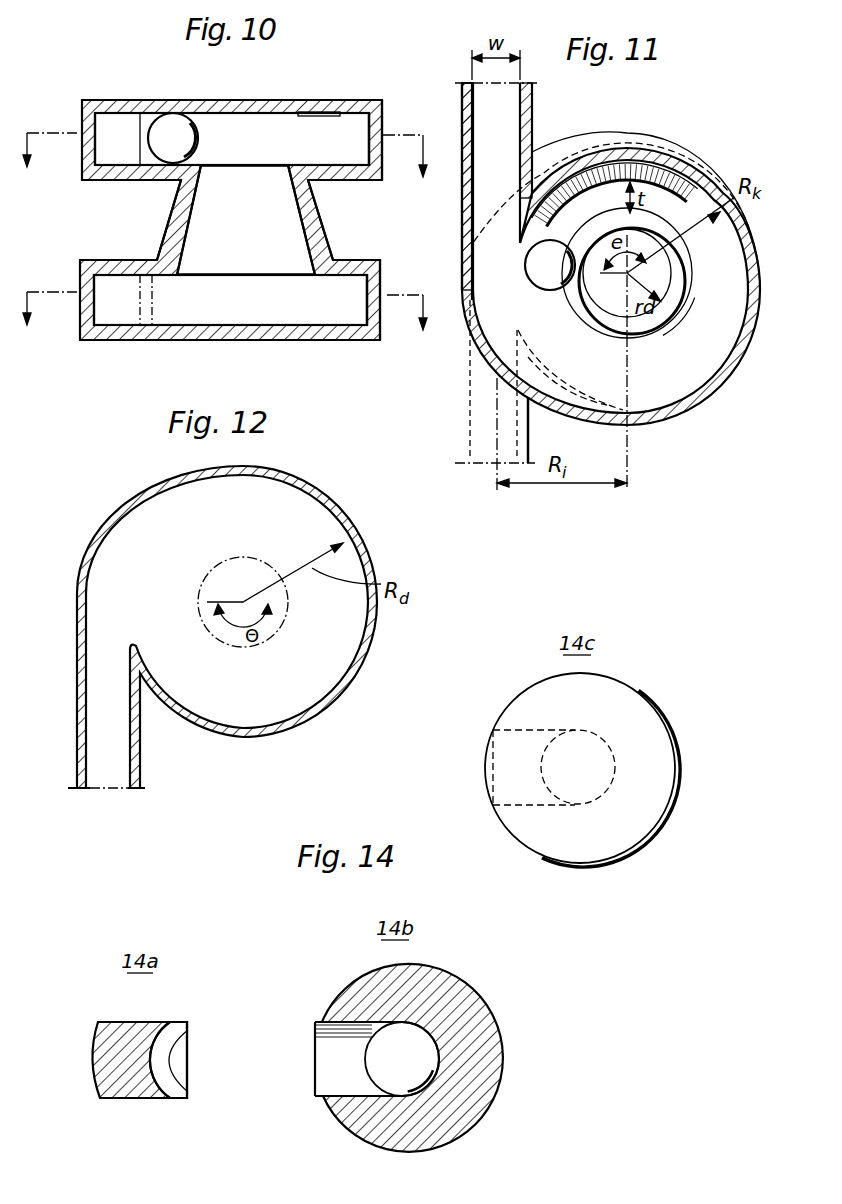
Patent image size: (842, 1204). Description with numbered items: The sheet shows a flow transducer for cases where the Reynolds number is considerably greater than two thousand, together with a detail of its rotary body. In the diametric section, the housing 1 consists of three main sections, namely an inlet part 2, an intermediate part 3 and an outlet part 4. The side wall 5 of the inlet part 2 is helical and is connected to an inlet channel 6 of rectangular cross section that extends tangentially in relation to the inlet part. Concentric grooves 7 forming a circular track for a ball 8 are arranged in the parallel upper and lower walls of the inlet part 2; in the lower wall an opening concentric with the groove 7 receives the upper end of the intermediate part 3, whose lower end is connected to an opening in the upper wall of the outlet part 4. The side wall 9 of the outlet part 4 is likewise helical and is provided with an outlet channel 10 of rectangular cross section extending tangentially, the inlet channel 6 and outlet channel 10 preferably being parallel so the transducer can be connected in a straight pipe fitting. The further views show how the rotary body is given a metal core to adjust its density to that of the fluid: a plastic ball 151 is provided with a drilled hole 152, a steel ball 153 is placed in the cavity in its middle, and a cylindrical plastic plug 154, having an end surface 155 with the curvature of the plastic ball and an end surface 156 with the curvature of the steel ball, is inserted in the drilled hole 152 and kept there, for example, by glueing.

In FIG. 10, the housing 1 is at (259, 96).
In FIG. 10, the inlet part 2 is at (217, 100).
In FIG. 10, the intermediate part 3 is at (173, 233).
In FIG. 10, the outlet part 4 is at (343, 333).
In FIG. 10, the side wall 5 is at (383, 123).
In FIG. 11, the side wall 5 is at (696, 398).
In FIG. 10, the inlet channel 6 is at (115, 127).
In FIG. 11, the inlet channel 6 is at (500, 118).
In FIG. 10, the concentric grooves 7 is at (313, 113).
In FIG. 11, the concentric grooves 7 is at (677, 210).
In FIG. 10, the ball 8 is at (167, 125).
In FIG. 11, the ball 8 is at (540, 265).
In FIG. 10, the side wall 9 is at (380, 280).
In FIG. 12, the side wall 9 is at (360, 638).
In FIG. 10, the outlet channel 10 is at (107, 288).
In FIG. 12, the outlet channel 10 is at (113, 757).
In FIG. 14, the plastic ball 151 is at (442, 1133).
In FIG. 14, the drilled hole 152 is at (322, 1047).
In FIG. 14, the steel ball 153 is at (482, 1019).
In FIG. 14, the cylindrical plastic plug 154 is at (127, 1080).
In FIG. 14, the end surface 155 is at (95, 1038).
In FIG. 14, the end surface 156 is at (187, 1040).